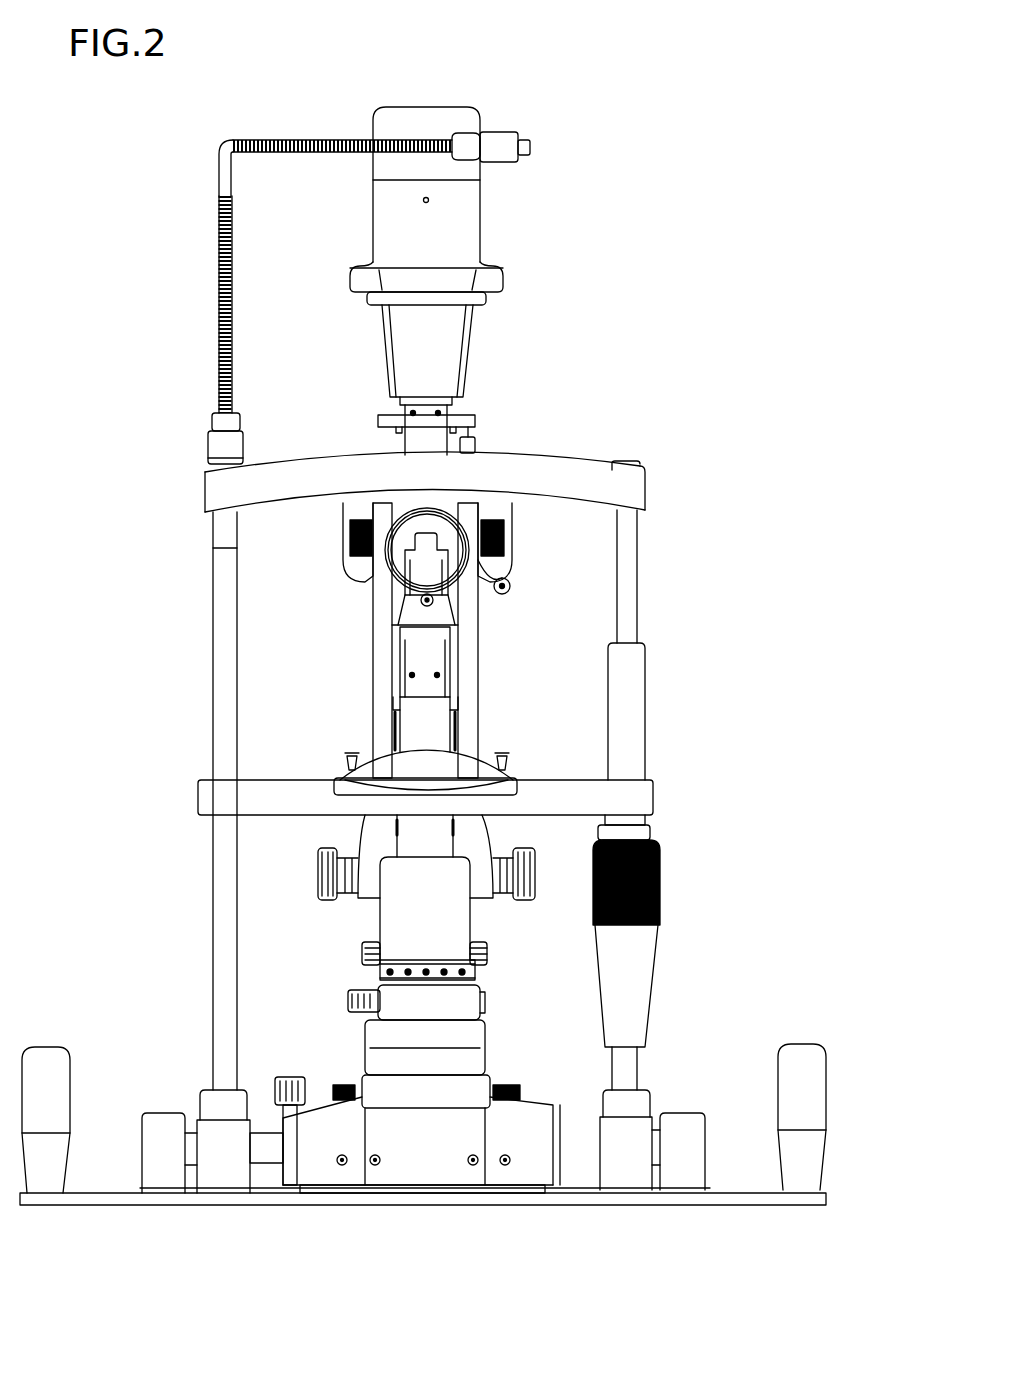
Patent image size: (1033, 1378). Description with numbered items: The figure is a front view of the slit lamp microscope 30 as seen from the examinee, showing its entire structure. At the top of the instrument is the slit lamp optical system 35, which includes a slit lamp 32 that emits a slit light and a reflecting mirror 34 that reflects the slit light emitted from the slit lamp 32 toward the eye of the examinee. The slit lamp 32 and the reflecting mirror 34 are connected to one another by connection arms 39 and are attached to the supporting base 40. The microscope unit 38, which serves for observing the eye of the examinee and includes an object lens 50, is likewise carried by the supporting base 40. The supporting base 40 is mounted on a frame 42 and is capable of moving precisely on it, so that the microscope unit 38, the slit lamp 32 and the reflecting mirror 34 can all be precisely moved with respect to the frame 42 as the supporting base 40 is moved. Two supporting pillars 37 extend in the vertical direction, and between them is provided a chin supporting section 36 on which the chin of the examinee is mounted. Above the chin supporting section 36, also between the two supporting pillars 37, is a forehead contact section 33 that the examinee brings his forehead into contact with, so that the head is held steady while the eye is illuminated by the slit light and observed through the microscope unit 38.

The slit lamp microscope 30 is at (683, 204).
The slit lamp 32 is at (474, 222).
The forehead contact section 33 is at (584, 468).
The reflecting mirror 34 is at (427, 573).
The slit lamp optical system 35 is at (478, 374).
The chin supporting section 36 is at (457, 763).
The supporting pillars 37 is at (222, 904).
The microscope unit 38 is at (336, 545).
The connection arms 39 is at (383, 613).
The supporting base 40 is at (382, 1057).
The frame 42 is at (443, 1168).
The object lens 50 is at (455, 528).